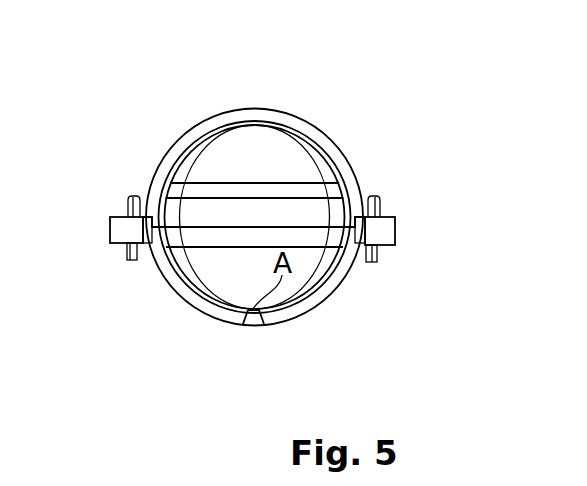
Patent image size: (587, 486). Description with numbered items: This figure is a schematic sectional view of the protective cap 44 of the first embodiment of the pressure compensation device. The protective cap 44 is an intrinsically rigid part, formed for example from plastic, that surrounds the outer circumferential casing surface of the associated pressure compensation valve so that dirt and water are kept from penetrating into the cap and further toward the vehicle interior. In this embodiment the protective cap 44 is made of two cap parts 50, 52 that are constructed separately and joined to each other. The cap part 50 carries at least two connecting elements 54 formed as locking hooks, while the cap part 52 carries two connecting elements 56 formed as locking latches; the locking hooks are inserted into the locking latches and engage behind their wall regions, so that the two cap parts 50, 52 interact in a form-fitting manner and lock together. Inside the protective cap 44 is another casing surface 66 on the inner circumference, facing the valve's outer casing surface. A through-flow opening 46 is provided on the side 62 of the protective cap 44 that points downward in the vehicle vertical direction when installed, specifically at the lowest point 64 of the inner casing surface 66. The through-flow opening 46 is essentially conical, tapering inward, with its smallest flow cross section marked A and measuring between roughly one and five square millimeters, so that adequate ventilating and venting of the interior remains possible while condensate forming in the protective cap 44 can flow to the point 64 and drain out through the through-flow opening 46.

The protective cap 44 is at (336, 138).
The through-flow opening 46 is at (252, 340).
The cap part 50 is at (198, 132).
The cap part 52 is at (297, 305).
The connecting element 54 is at (128, 247).
The connecting element 56 is at (124, 224).
The side 62 is at (207, 342).
The lowest point 64 is at (244, 290).
The casing surface 66 is at (250, 132).